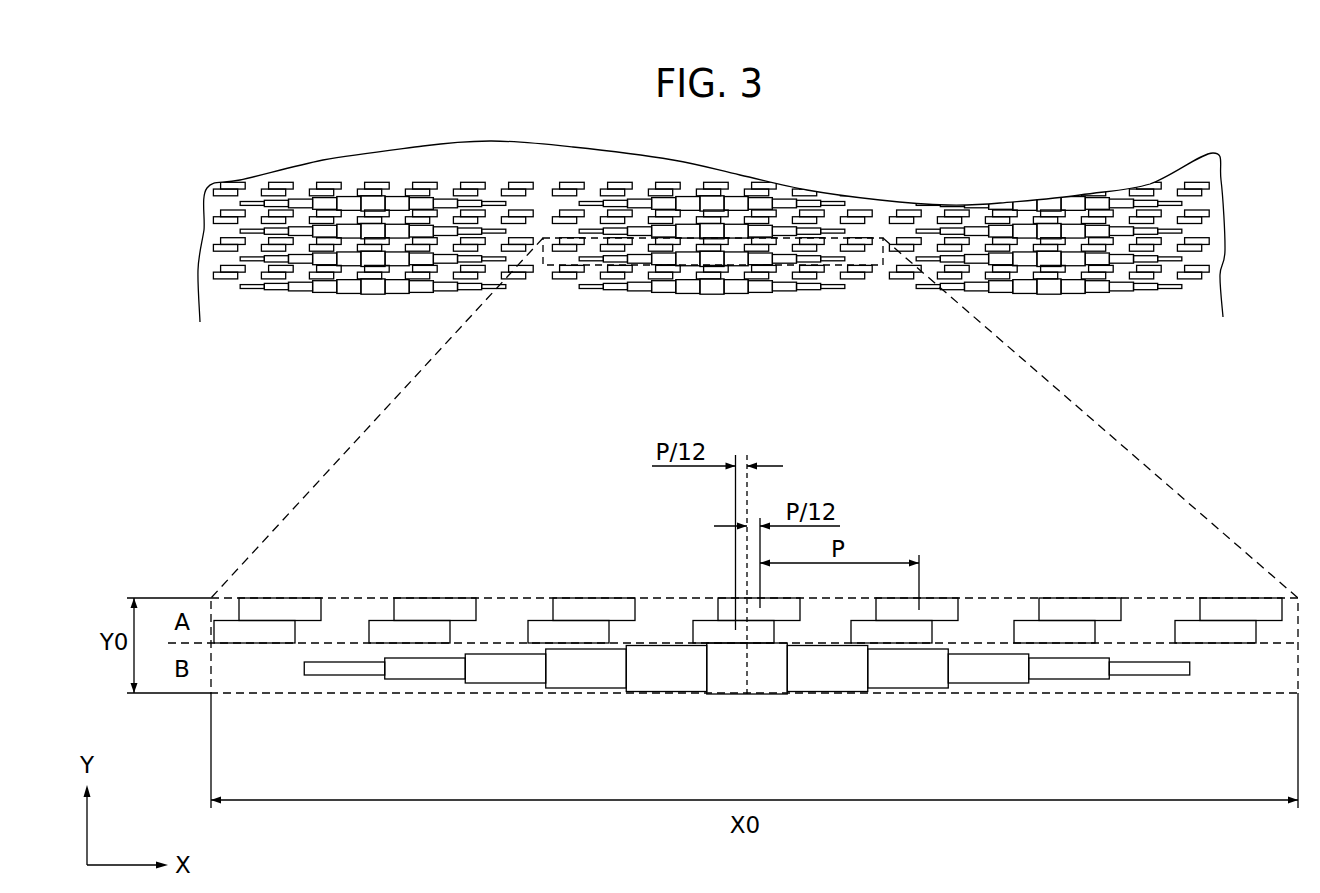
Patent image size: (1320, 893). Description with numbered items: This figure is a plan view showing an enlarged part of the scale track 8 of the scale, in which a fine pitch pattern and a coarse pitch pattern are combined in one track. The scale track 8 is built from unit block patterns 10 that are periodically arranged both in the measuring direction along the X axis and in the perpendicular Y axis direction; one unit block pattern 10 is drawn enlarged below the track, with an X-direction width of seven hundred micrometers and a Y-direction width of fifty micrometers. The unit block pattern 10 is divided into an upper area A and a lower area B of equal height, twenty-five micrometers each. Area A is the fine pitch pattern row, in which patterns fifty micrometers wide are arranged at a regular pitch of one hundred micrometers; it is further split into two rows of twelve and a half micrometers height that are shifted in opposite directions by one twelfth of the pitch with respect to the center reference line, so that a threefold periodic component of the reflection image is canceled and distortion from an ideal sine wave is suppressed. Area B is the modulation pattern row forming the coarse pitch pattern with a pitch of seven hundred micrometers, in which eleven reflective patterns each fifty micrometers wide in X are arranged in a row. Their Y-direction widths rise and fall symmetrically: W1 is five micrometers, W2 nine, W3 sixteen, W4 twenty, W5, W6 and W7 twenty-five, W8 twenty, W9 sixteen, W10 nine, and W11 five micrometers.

The scale track 8 is at (1098, 287).
The unit block pattern 10 is at (733, 655).
The Y-direction width of first reflective pattern W1 is at (344, 630).
The Y-direction width of second reflective pattern W2 is at (425, 630).
The Y-direction width of third reflective pattern W3 is at (506, 630).
The Y-direction width of fourth reflective pattern W4 is at (586, 630).
The Y-direction width of fifth reflective pattern W5 is at (666, 630).
The Y-direction width of sixth reflective pattern W6 is at (725, 611).
The Y-direction width of seventh reflective pattern W7 is at (828, 630).
The Y-direction width of eighth reflective pattern W8 is at (908, 630).
The Y-direction width of ninth reflective pattern W9 is at (988, 630).
The Y-direction width of tenth reflective pattern W10 is at (1069, 630).
The Y-direction width of eleventh reflective pattern W11 is at (1150, 630).